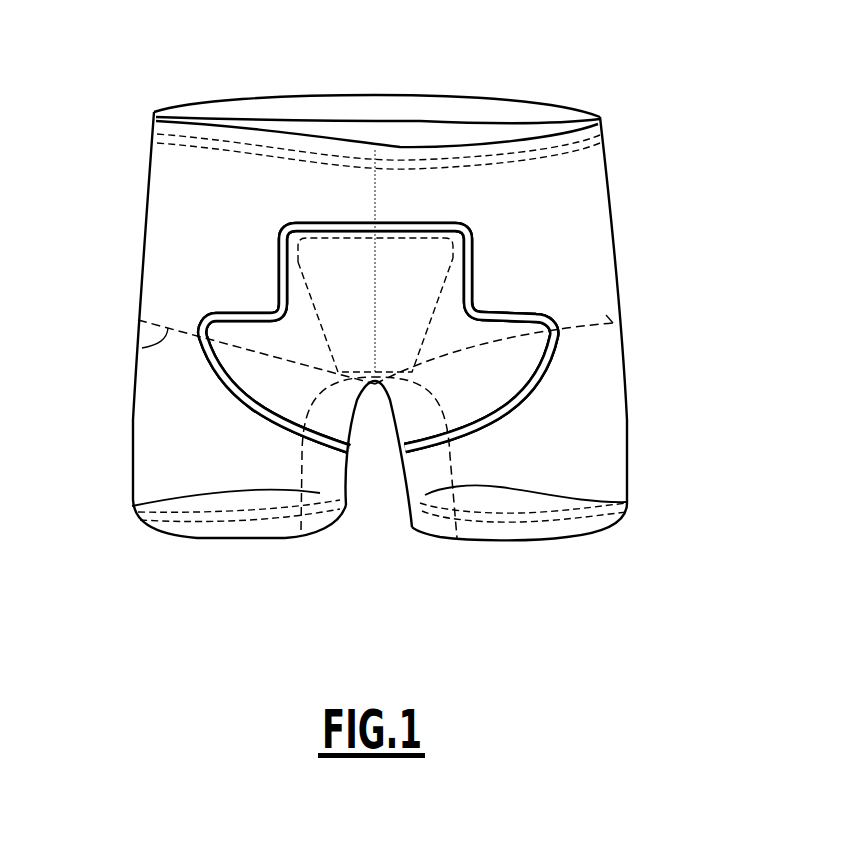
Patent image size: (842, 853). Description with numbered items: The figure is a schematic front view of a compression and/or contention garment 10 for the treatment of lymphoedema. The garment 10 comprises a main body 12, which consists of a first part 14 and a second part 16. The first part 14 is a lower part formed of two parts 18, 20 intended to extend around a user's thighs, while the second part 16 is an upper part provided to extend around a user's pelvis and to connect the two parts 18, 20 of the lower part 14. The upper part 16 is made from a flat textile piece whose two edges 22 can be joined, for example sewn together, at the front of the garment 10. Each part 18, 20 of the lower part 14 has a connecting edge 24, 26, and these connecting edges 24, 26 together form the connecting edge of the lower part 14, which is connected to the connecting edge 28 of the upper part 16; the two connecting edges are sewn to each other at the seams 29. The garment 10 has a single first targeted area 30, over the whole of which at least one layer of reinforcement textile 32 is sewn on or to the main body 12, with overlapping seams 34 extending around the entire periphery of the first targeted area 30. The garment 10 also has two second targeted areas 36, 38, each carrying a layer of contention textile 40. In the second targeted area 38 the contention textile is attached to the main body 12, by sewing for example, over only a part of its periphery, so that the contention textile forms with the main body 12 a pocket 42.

The compression and/or contention garment 10 is at (665, 405).
The main body 12 is at (612, 192).
The first part 14 is at (132, 400).
The second part 16 is at (147, 255).
The part of the lower part 18 is at (156, 458).
The part of the lower part 20 is at (595, 459).
The edges 22 is at (375, 223).
The connecting edge 24 is at (142, 348).
The connecting edge 26 is at (582, 332).
The connecting edge of the upper part 28 is at (502, 346).
The seams 29 is at (606, 315).
The first targeted area 30 is at (265, 332).
The reinforcement textile 32 is at (324, 257).
The overlapping seams 34 is at (467, 293).
The second targeted area 36 is at (627, 502).
The second targeted area 38 is at (407, 320).
The contention textile 40 is at (132, 506).
The pocket 42 is at (338, 324).